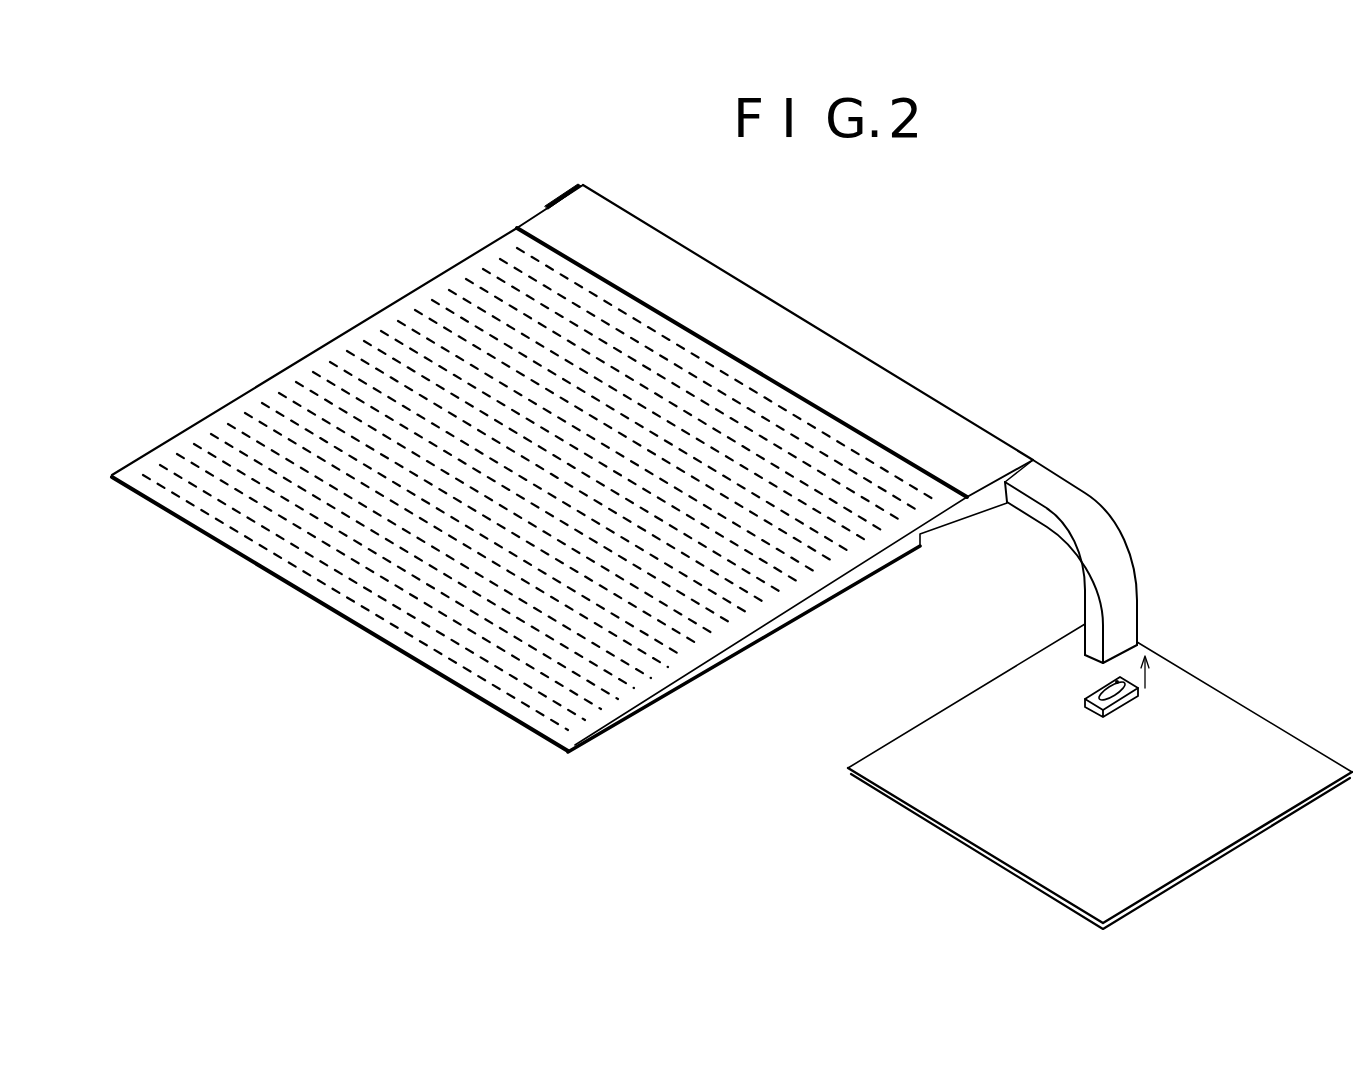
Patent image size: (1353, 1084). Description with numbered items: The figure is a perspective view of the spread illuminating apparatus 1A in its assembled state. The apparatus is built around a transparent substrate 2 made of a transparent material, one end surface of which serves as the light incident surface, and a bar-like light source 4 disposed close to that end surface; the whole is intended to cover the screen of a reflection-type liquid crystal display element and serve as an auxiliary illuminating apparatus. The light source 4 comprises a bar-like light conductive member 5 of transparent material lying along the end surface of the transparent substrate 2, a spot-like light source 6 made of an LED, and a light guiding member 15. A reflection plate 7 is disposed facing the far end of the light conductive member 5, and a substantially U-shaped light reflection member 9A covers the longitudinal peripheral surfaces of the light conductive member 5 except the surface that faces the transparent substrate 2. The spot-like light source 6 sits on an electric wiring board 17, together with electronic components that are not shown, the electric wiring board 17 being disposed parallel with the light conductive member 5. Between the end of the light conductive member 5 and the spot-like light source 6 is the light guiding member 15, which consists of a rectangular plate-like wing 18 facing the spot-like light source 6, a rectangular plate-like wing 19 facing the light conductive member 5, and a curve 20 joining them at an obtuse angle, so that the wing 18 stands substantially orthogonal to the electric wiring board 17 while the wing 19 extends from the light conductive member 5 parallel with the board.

The spread illuminating apparatus 1A is at (1081, 334).
The transparent substrate 2 is at (813, 607).
The light source 4 is at (1127, 718).
The light conductive member 5 is at (865, 378).
The spot-like light source 6 is at (1097, 693).
The reflection plate 7 is at (562, 196).
The light reflection member 9A is at (945, 433).
The light guiding member 15 is at (1255, 393).
The electric wiring board 17 is at (957, 812).
The wing 18 is at (1113, 622).
The wing 19 is at (1055, 492).
The curve 20 is at (1100, 543).